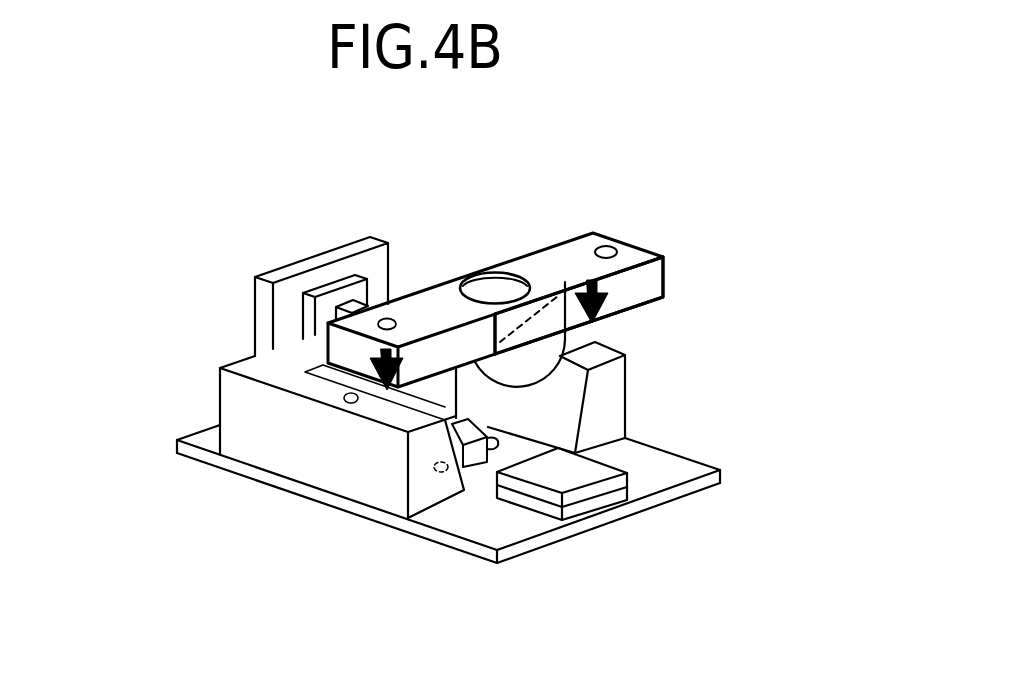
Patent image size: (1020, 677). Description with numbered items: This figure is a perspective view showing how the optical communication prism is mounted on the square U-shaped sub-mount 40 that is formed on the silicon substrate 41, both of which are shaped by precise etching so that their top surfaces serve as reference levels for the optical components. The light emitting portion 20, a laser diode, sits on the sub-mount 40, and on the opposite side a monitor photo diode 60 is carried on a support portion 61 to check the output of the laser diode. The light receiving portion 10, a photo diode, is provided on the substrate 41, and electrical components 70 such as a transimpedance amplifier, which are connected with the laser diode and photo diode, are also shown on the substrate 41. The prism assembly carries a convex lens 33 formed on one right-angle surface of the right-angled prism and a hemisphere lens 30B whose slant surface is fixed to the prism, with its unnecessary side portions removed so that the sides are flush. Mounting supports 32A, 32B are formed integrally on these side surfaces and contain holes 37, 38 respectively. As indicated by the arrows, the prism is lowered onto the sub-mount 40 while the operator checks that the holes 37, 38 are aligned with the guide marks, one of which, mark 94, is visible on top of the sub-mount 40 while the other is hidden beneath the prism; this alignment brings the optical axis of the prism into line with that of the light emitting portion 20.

The light receiving portion 10 is at (478, 457).
The light emitting portion 20 is at (353, 305).
The hemisphere lens 30B is at (533, 350).
The mounting support 32A is at (433, 288).
The mounting support 32B is at (562, 243).
The convex lens 33 is at (495, 287).
The hole 37 is at (432, 305).
The hole 38 is at (603, 247).
The sub-mount 40 is at (232, 413).
The substrate 41 is at (330, 500).
The monitor photo diode 60 is at (337, 285).
The support portion 61 is at (278, 275).
The electrical components 70 is at (595, 492).
The mark 94 is at (345, 398).